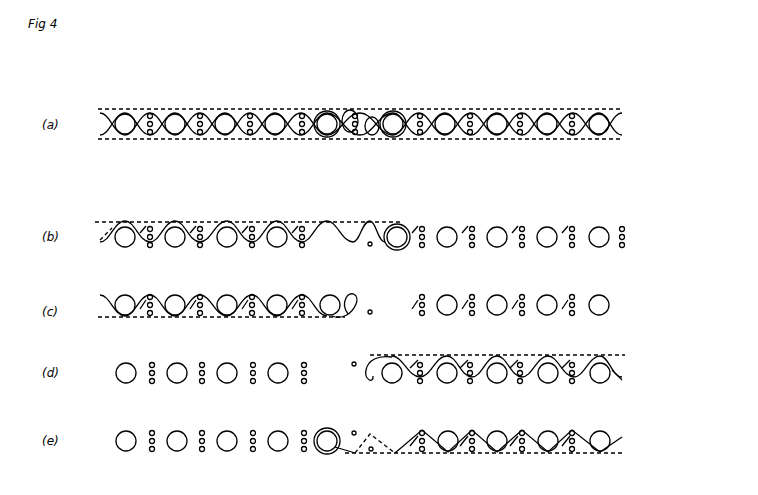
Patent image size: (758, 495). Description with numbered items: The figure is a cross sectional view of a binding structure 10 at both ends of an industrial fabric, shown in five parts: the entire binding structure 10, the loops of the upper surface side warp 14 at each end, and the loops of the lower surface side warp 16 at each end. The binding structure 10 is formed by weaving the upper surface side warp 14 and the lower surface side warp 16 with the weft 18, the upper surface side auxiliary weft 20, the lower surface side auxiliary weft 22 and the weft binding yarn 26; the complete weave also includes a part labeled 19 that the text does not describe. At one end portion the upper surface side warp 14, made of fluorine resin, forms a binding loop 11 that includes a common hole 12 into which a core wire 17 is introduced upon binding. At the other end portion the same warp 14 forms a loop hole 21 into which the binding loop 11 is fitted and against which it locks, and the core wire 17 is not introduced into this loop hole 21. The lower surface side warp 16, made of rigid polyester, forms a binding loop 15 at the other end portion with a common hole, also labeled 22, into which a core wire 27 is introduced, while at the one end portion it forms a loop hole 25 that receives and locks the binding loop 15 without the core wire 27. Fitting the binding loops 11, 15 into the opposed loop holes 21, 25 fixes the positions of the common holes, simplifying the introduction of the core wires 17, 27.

The binding structure 10 is at (386, 105).
The binding loop 11 is at (405, 231).
The common hole 12 is at (408, 222).
The upper surface side warp 14 is at (113, 108).
The binding loop 15 is at (330, 428).
The lower surface side warp 16 is at (254, 138).
The core wire 17 is at (393, 128).
The weft 18 is at (452, 108).
The knitting needle 19 is at (335, 108).
The upper surface side auxiliary weft 20 is at (250, 112).
The loop hole 21 is at (368, 359).
The lower surface side auxiliary weft 22 is at (428, 128).
The loop hole 25 is at (358, 300).
The weft binding yarn 26 is at (192, 118).
The core wire 27 is at (328, 128).